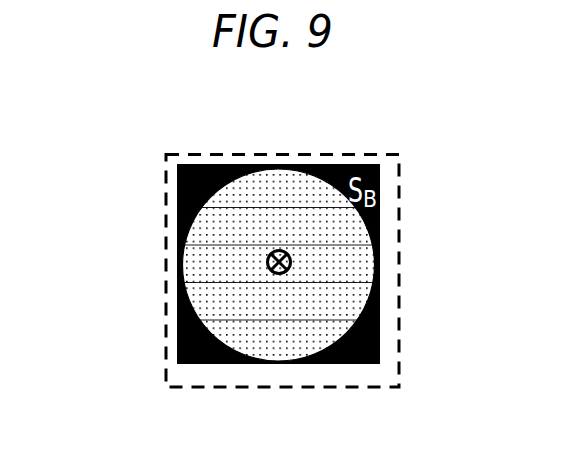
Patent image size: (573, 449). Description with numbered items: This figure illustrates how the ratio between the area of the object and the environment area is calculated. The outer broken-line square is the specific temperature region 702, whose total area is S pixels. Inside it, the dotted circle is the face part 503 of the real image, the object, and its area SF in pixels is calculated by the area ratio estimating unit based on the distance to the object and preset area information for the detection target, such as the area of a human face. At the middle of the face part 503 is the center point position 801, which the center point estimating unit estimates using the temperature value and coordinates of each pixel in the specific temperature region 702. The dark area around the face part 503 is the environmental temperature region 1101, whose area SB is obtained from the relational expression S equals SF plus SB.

The specific temperature region 702 is at (345, 156).
The environmental temperature region 1101 is at (183, 350).
The face part of the real image 503 is at (325, 300).
The center point position 801 is at (288, 253).